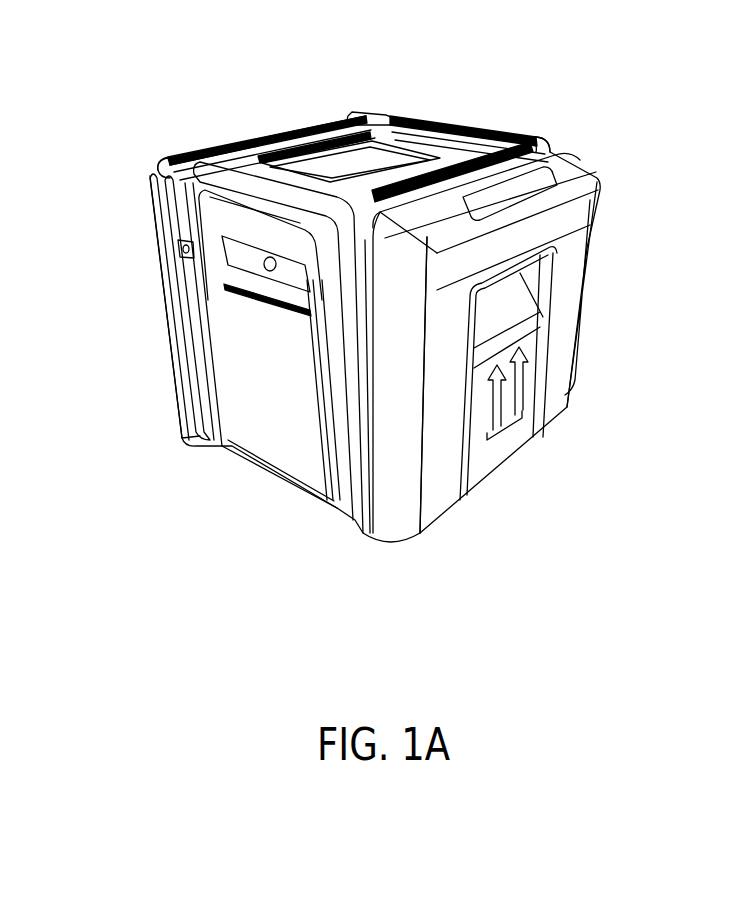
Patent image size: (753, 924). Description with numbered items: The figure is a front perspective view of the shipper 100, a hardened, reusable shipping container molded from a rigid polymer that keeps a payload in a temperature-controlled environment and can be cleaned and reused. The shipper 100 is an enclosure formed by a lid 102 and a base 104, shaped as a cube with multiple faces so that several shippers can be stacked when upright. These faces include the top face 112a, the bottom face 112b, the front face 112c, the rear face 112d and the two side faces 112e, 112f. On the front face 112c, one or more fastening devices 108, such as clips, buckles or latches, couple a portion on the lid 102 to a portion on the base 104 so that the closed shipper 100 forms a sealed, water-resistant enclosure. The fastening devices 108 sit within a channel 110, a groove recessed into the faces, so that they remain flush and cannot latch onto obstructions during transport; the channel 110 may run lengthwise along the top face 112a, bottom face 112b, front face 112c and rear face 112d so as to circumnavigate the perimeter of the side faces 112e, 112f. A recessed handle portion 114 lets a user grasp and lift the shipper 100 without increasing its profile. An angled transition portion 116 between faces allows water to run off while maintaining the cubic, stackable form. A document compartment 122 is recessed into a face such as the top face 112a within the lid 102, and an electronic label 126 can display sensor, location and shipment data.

The shipper 100 is at (118, 92).
The lid 102 is at (367, 112).
The base 104 is at (230, 447).
The fastening device 108 is at (178, 213).
The channel 110 is at (197, 352).
The top face 112a is at (257, 150).
The bottom face 112b is at (422, 533).
The front face 112c is at (182, 380).
The rear face 112d is at (585, 277).
The side face 112e is at (535, 373).
The side face 112f is at (183, 165).
The handle portion 114 is at (542, 313).
The angled transition portion 116 is at (573, 153).
The document compartment 122 is at (445, 120).
The electronic label 126 is at (187, 248).